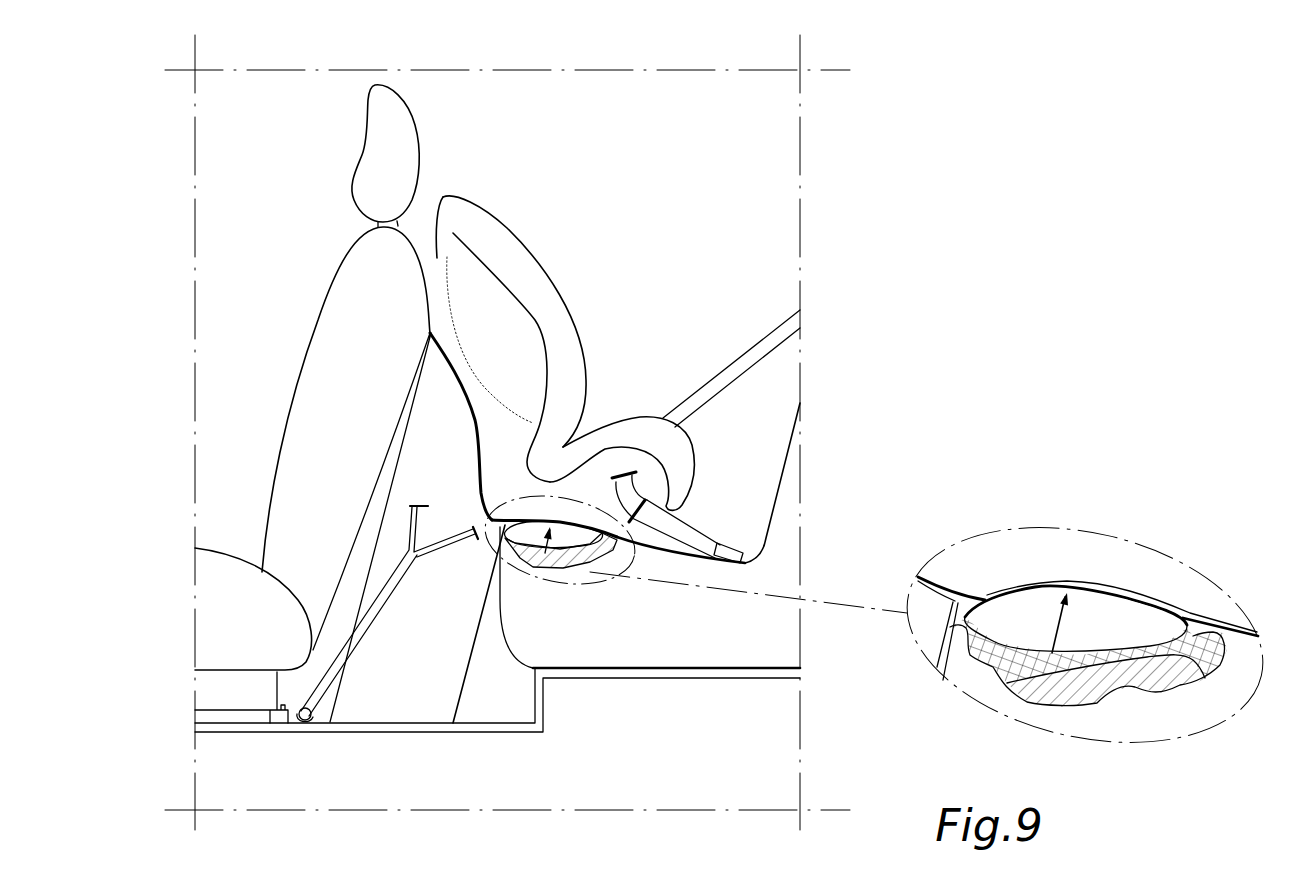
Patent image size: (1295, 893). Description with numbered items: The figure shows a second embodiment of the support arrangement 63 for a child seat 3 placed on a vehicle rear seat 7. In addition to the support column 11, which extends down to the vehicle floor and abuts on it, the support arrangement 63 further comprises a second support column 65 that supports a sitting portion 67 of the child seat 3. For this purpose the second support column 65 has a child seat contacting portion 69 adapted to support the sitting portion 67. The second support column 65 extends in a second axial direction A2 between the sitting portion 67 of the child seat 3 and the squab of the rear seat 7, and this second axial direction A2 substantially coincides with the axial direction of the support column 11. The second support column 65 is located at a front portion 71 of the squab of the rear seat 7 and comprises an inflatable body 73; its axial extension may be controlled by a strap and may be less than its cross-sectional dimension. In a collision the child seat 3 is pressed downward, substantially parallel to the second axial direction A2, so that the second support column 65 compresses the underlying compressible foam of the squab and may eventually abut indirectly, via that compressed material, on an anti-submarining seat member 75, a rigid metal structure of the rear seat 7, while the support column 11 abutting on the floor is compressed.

The child seat 3 is at (588, 274).
The rear seat 7 is at (645, 630).
The support column 11 is at (480, 673).
The support arrangement 63 is at (700, 182).
The second support column 65 is at (519, 517).
The sitting portion 67 is at (1138, 605).
The child seat contacting portion 69 is at (1096, 590).
The front portion 71 is at (557, 624).
The inflatable body 73 is at (1083, 639).
The anti-submarining seat member 75 is at (563, 567).
The second axial direction A2 is at (1057, 615).